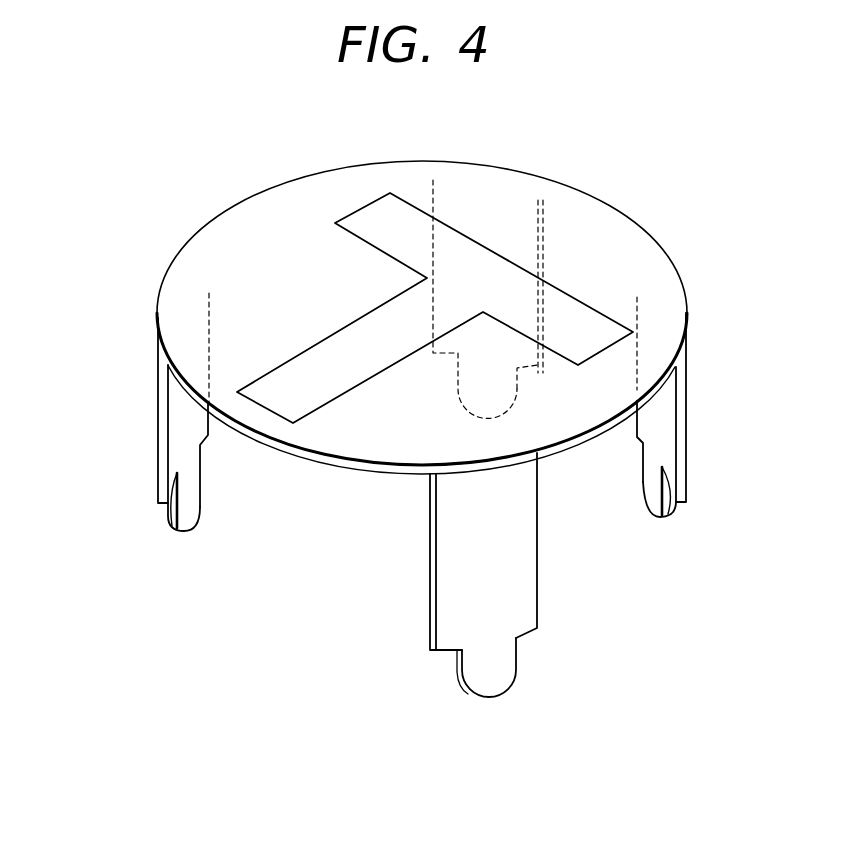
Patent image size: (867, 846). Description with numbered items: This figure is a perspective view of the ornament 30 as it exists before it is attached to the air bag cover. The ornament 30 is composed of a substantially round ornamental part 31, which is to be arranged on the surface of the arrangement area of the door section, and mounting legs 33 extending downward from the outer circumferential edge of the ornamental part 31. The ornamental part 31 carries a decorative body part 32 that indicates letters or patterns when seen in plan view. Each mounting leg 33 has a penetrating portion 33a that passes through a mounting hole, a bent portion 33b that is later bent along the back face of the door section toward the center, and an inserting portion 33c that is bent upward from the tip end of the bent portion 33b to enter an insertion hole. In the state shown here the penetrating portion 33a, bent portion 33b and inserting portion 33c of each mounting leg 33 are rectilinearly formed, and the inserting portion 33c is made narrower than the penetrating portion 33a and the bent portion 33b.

The ornament 30 is at (215, 149).
The ornamental part 31 is at (245, 240).
The decorative body part 32 is at (363, 220).
The mounting leg 33 is at (443, 400).
The penetrating portion 33a is at (482, 208).
The bent portion 33b is at (535, 327).
The inserting portion 33c is at (465, 411).